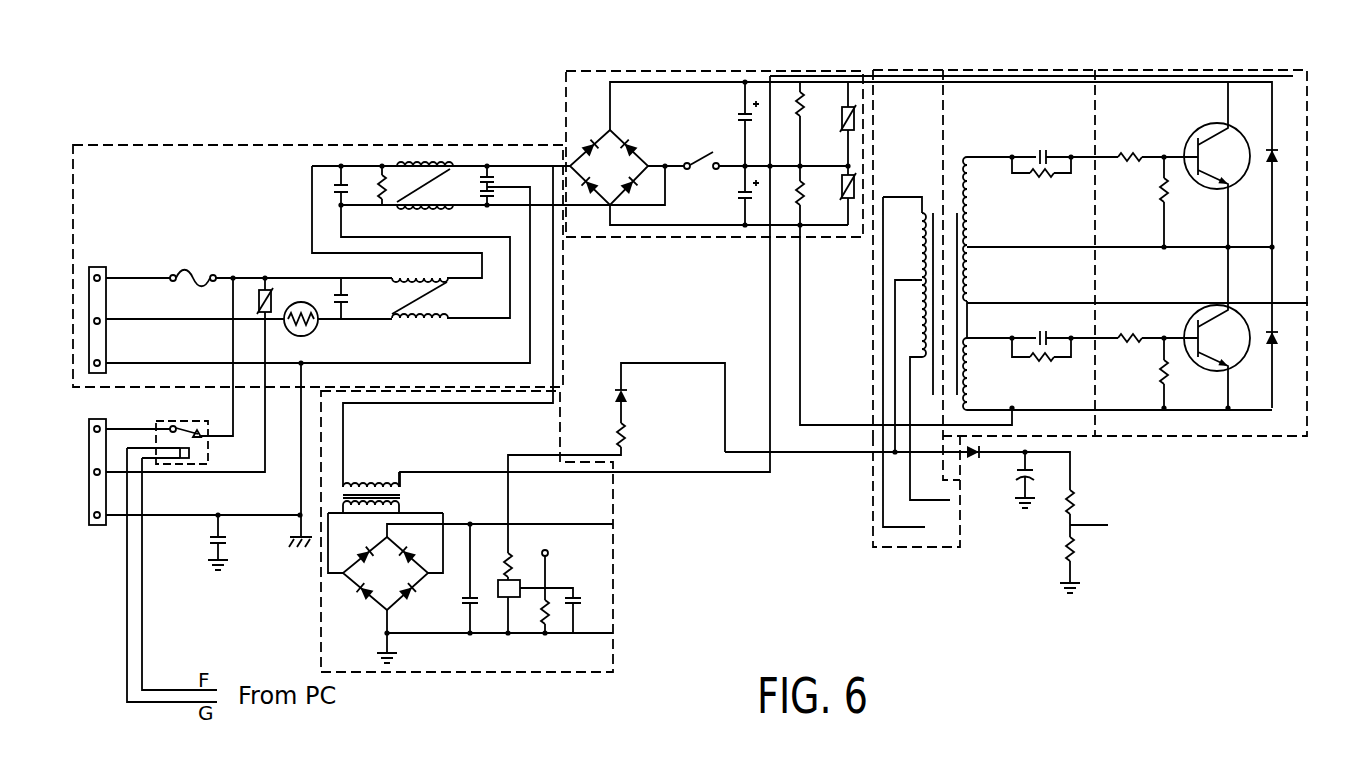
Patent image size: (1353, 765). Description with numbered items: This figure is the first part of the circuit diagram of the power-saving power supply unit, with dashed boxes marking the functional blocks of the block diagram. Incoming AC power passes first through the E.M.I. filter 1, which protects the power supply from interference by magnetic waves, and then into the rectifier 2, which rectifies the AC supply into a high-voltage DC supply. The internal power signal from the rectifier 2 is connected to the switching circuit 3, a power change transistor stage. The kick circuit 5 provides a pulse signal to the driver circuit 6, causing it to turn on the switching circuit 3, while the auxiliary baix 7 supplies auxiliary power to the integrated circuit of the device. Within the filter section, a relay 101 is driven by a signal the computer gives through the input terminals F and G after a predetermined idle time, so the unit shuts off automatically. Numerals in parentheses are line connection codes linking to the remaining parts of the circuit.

The E.M.I. filter 1 is at (278, 145).
The rectifier 2 is at (620, 71).
The switching circuit 3 is at (1147, 70).
The kick circuit 5 is at (992, 70).
The driver circuit 6 is at (923, 547).
The auxiliary baix 7 is at (613, 587).
The relay 101 is at (128, 329).